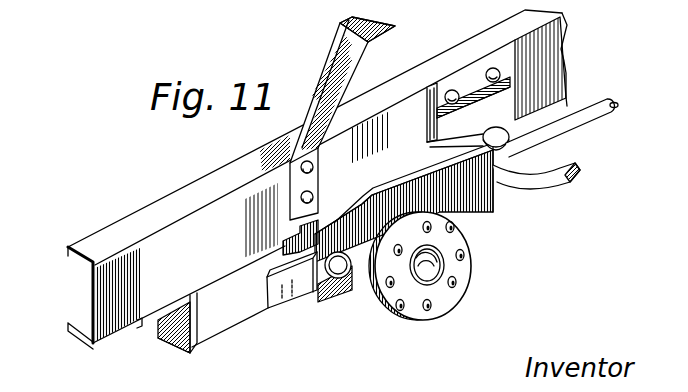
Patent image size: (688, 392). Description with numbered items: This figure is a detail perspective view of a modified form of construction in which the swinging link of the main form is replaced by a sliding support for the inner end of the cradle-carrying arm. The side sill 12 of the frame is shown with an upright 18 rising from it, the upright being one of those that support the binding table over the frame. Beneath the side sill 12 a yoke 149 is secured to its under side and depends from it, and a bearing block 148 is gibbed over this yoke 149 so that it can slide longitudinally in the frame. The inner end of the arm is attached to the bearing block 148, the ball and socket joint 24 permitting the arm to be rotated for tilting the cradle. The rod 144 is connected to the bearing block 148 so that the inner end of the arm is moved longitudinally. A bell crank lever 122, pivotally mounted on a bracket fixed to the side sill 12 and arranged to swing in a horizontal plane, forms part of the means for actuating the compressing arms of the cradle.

The side sill 12 is at (90, 287).
The upright 18 is at (340, 42).
The ball and socket joint 24 is at (448, 269).
The bell crank lever 122 is at (573, 132).
The rod 144 is at (283, 308).
The bearing block 148 is at (462, 221).
The yoke 149 is at (193, 355).